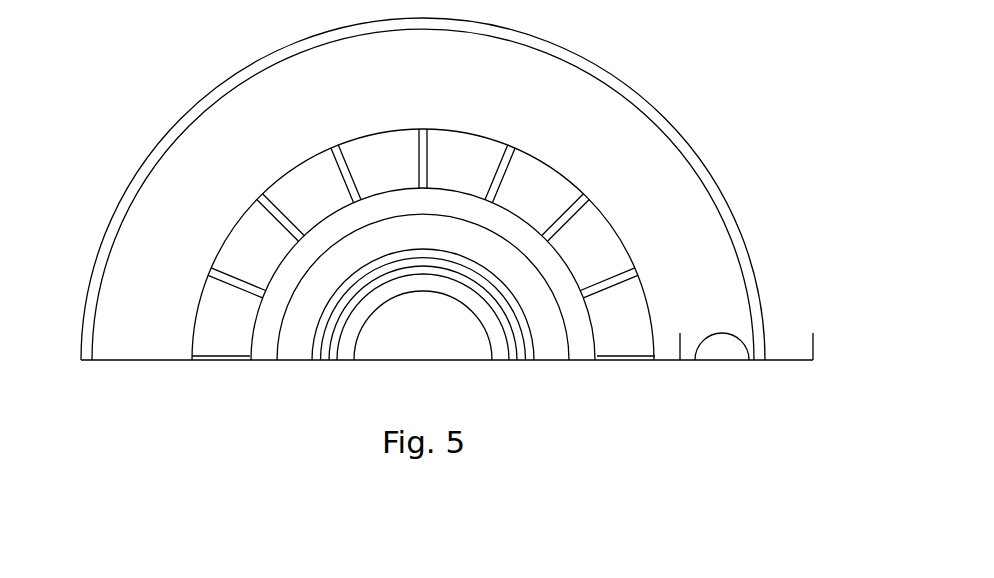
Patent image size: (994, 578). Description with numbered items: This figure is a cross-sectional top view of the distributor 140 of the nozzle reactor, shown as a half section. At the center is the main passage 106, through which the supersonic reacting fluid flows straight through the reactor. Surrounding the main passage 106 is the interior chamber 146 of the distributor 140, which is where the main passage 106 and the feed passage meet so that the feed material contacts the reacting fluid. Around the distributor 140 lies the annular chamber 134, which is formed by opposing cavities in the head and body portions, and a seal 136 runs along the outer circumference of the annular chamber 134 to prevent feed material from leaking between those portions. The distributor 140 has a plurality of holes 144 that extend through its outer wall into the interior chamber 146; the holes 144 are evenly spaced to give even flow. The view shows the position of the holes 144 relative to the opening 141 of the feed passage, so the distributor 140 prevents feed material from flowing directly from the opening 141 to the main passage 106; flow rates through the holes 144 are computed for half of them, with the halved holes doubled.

The main passage 106 is at (422, 362).
The annular chamber 134 is at (602, 90).
The seal 136 is at (140, 175).
The distributor 140 is at (603, 238).
The opening 141 is at (728, 350).
The holes 144 is at (418, 143).
The interior chamber 146 is at (558, 343).